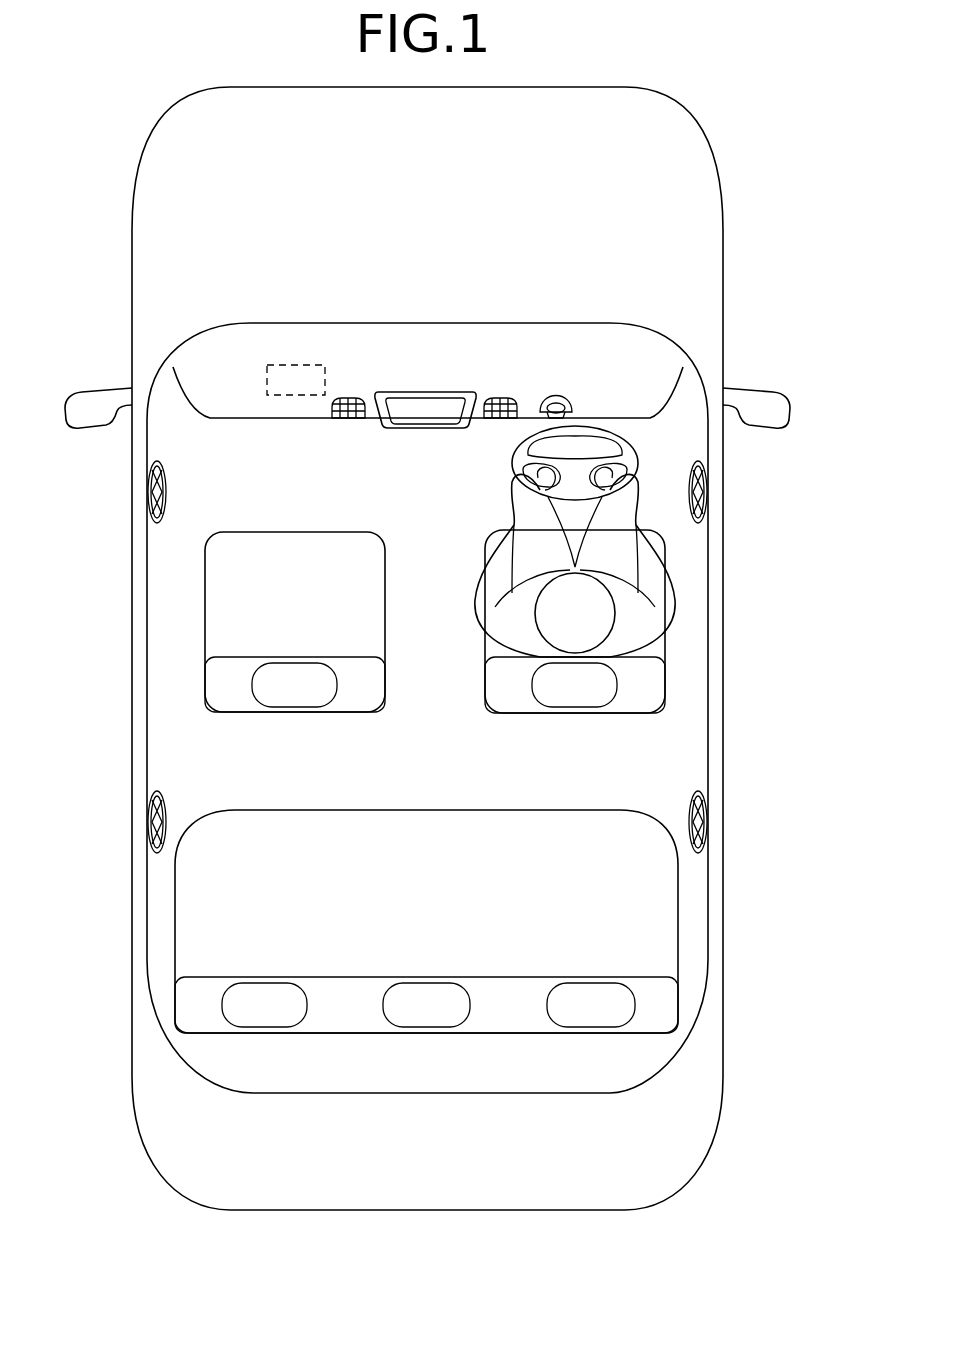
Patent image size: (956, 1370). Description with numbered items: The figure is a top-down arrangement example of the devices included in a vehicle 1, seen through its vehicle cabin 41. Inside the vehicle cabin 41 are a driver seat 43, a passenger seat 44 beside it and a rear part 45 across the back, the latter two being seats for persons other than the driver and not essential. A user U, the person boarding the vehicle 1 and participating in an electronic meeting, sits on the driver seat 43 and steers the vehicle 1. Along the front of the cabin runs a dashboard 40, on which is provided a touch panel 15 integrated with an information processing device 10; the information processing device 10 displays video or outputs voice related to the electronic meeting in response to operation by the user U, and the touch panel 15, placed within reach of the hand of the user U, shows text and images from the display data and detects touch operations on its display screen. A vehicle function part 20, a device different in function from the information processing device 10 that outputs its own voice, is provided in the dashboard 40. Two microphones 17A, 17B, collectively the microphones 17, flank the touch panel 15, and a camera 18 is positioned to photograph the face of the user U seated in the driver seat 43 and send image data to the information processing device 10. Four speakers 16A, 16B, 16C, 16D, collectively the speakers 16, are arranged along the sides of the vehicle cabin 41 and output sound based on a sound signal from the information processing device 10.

The vehicle 1 is at (724, 333).
The dashboard 40 is at (221, 360).
The vehicle cabin 41 is at (697, 690).
The vehicle function part 20 is at (283, 364).
The microphones 17 is at (448, 352).
The microphone 17A is at (497, 397).
The microphone 17B is at (347, 397).
The information processing device 10 is at (425, 415).
The touch panel 15 is at (437, 429).
The camera 18 is at (565, 396).
The speakers 16 is at (481, 657).
The speaker 16A is at (700, 523).
The speaker 16B is at (166, 506).
The speaker 16C is at (162, 800).
The speaker 16D is at (690, 802).
The passenger seat 44 is at (205, 700).
The driver seat 43 is at (658, 713).
The rear part 45 is at (430, 810).
The user U is at (476, 588).